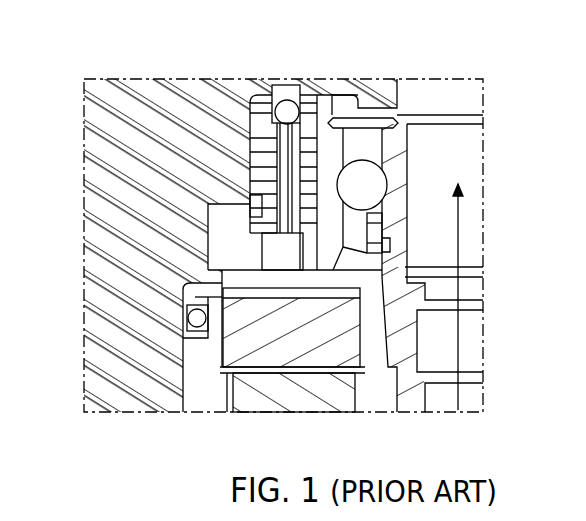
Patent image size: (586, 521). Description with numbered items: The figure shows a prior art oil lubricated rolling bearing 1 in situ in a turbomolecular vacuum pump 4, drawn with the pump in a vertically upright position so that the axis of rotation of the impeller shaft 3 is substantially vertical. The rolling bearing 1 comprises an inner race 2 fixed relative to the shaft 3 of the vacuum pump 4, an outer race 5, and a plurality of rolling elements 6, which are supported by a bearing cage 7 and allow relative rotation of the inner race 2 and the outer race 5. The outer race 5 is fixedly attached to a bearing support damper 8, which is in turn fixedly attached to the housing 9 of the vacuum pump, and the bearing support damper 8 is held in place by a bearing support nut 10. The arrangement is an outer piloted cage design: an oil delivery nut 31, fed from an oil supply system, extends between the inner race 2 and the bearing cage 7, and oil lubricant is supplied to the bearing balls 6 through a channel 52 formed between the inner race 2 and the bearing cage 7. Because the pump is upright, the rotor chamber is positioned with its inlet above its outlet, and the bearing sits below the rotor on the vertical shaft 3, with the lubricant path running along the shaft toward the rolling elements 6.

The rolling bearing 1 is at (365, 116).
The inner race 2 is at (397, 163).
The shaft 3 is at (437, 240).
The vacuum pump 4 is at (128, 55).
The outer race 5 is at (327, 153).
The rolling elements 6 is at (352, 178).
The bearing cage 7 is at (353, 232).
The bearing support damper 8 is at (265, 165).
The housing 9 is at (113, 97).
The bearing support nut 10 is at (222, 255).
The oil delivery nut 31 is at (403, 372).
The channel 52 is at (408, 211).